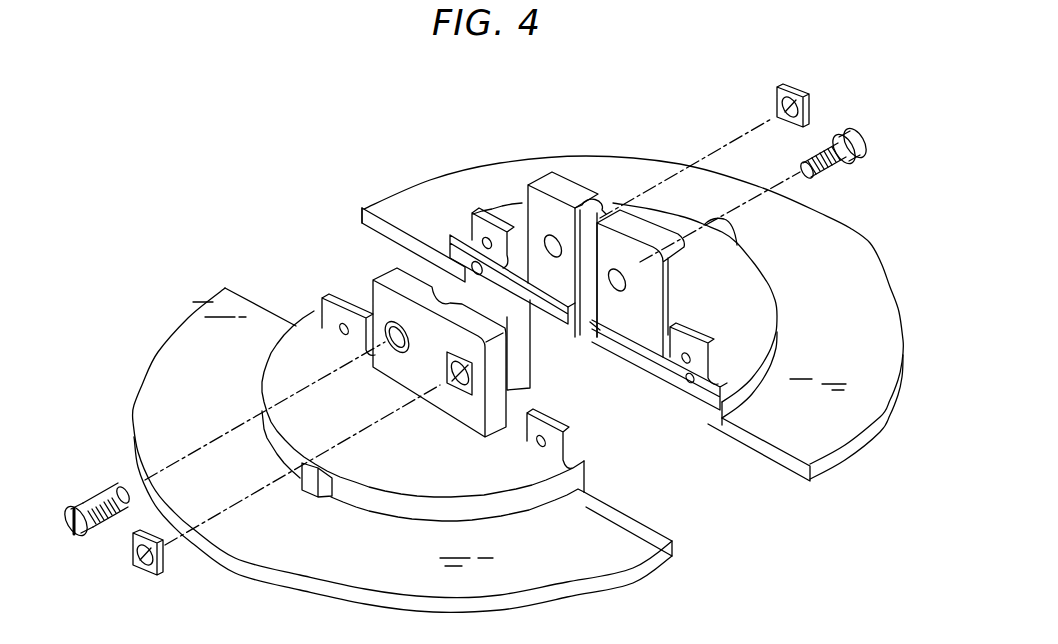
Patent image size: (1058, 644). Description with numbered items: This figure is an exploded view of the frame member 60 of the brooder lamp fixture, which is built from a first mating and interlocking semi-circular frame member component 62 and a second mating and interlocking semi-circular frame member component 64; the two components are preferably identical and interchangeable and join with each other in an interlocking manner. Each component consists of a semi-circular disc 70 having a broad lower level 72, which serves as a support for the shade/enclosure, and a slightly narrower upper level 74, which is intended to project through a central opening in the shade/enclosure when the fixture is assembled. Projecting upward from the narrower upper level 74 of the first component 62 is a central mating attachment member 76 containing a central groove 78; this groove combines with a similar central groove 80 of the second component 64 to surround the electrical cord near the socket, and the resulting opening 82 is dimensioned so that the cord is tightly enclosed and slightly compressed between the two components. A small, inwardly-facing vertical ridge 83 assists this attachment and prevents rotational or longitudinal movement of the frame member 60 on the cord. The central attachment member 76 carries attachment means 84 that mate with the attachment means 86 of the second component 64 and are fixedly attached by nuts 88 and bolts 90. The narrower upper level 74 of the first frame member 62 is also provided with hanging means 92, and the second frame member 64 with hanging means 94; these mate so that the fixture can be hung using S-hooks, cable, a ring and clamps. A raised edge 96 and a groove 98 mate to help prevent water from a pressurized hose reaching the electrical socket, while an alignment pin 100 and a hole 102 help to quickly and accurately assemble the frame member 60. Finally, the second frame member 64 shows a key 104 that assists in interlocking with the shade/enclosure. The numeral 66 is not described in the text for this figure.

The frame member 60 is at (862, 258).
The first mating and interlocking semi-circular frame member component 62 is at (888, 300).
The second mating and interlocking semi-circular frame member component 64 is at (610, 566).
The straight edge of first half plate 66 is at (823, 468).
The semi-circular disc 70 is at (427, 178).
The broad lower level 72 is at (375, 205).
The narrower upper level 74 is at (503, 210).
The central mating attachment member 76 is at (647, 217).
The central groove 78 is at (588, 212).
The central groove 80 is at (420, 270).
The opening 82 is at (468, 215).
The inwardly-facing vertical ridge 83 is at (590, 327).
The attachment means 84 is at (547, 242).
The attachment means 86 is at (391, 352).
The nuts 88 is at (800, 88).
The bolts 90 is at (862, 135).
The hanging means 92 is at (697, 337).
The hanging means 94 is at (323, 300).
The raised edge 96 is at (567, 318).
The groove 98 is at (667, 366).
The alignment pin 100 is at (480, 273).
The hole 102 is at (688, 382).
The key 104 is at (315, 497).